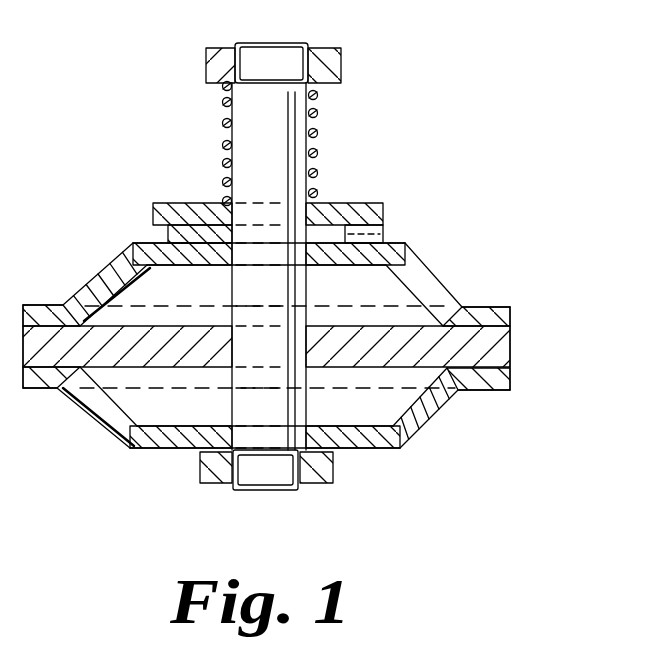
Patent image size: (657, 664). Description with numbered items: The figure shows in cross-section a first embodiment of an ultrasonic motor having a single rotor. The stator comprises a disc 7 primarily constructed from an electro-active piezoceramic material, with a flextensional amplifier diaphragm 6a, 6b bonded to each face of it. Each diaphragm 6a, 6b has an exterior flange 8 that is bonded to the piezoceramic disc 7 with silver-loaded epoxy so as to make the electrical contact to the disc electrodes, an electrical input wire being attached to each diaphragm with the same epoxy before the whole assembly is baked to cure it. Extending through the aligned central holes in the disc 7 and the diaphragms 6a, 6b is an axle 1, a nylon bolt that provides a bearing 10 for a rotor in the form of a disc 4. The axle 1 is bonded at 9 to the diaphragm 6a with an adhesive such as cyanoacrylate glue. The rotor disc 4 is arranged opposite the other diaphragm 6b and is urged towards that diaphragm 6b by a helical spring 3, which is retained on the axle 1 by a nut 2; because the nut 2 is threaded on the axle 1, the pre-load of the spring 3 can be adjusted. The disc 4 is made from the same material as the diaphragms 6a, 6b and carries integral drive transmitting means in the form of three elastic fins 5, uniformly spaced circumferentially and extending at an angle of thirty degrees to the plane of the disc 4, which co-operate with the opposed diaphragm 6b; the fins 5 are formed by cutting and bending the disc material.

The axle 1 is at (295, 44).
The nut 2 is at (340, 82).
The helical spring 3 is at (318, 133).
The disc 4 is at (383, 210).
The elastic fins 5 is at (180, 238).
The flextensional amplifier diaphragm 6a is at (430, 403).
The flextensional amplifier diaphragm 6b is at (440, 290).
The disc 7 is at (66, 350).
The exterior flange 8 is at (508, 371).
The bond 9 is at (258, 459).
The bearing 10 is at (250, 203).